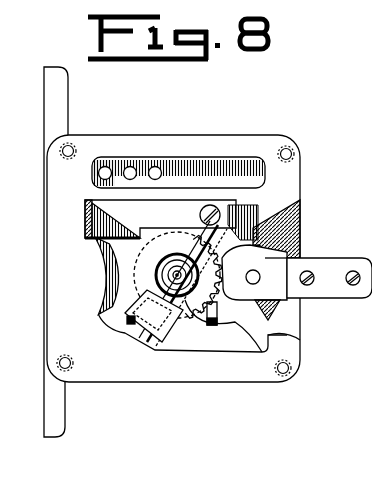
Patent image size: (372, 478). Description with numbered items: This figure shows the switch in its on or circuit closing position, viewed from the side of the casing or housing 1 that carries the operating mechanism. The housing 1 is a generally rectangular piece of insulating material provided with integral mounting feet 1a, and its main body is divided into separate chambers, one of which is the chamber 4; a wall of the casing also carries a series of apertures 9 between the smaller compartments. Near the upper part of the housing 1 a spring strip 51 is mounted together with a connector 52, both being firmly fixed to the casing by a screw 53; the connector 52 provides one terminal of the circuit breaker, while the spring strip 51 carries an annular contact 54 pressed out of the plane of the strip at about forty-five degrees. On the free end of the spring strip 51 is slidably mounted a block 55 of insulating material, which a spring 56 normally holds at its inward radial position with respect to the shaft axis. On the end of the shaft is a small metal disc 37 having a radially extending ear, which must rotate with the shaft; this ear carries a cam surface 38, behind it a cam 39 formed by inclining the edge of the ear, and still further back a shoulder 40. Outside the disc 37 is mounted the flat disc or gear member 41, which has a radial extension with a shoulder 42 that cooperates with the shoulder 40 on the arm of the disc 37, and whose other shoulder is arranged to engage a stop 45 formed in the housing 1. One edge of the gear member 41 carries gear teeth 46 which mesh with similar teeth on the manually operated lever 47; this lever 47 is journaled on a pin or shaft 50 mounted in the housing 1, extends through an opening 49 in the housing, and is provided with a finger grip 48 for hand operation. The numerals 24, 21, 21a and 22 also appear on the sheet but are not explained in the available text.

The casing or housing 1 is at (173, 427).
The mounting feet 1a is at (60, 96).
The chamber or compartment 4 is at (366, 40).
The apertures 9 is at (108, 168).
The stop 45 is at (173, 232).
The connector 52 is at (171, 220).
The screw 53 is at (216, 206).
The annular contact 54 is at (108, 252).
The spring strip 51 is at (272, 216).
The disc or gear member 41 is at (94, 283).
The shoulder 42 is at (104, 333).
The cam 39 is at (196, 340).
The shoulder 40 is at (164, 342).
The block 55 is at (145, 340).
The spring 56 is at (138, 345).
The disc 37 is at (223, 345).
The pin or shaft 50 is at (265, 298).
The opening 49 is at (300, 300).
The cam surface 38 is at (250, 345).
The gear teeth 46 is at (287, 343).
The manually operated lever 47 is at (265, 258).
The finger grip 48 is at (337, 268).
The member 24 is at (359, 350).
The member 21 is at (365, 392).
The member 21a is at (371, 438).
The member 22 is at (360, 475).